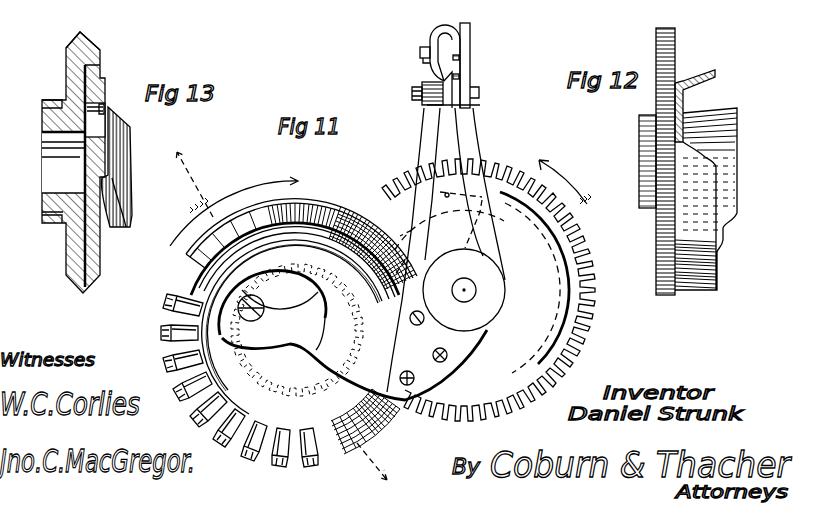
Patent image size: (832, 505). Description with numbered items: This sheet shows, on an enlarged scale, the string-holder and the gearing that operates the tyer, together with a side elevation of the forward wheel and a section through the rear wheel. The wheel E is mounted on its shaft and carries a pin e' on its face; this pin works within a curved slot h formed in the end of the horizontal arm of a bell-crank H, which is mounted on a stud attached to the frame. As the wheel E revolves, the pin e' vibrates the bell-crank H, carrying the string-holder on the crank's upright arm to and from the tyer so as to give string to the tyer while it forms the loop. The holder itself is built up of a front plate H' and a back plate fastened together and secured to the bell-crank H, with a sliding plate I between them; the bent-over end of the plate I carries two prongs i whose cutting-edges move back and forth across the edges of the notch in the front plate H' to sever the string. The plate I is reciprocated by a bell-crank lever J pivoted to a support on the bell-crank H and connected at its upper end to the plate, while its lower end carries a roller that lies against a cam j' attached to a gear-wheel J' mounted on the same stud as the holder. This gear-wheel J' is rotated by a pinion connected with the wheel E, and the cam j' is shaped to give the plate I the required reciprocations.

In FIG. 11, the wheel E is at (277, 316).
In FIG. 13, the wheel E is at (81, 162).
In FIG. 11, the pin e' is at (297, 330).
In FIG. 11, the curved slot h is at (289, 290).
In FIG. 13, the curved slot h is at (95, 114).
In FIG. 11, the bell-crank H is at (363, 254).
In FIG. 13, the bell-crank H is at (129, 167).
In FIG. 11, the front plate H' is at (422, 85).
In FIG. 11, the sliding plate I is at (450, 26).
In FIG. 11, the prongs i is at (443, 78).
In FIG. 11, the bell-crank lever J is at (488, 290).
In FIG. 12, the gear-wheel J' is at (657, 179).
In FIG. 12, the cam j' is at (706, 180).